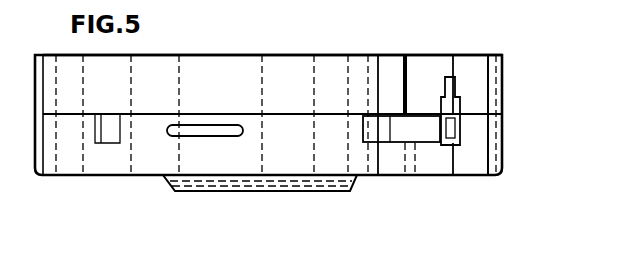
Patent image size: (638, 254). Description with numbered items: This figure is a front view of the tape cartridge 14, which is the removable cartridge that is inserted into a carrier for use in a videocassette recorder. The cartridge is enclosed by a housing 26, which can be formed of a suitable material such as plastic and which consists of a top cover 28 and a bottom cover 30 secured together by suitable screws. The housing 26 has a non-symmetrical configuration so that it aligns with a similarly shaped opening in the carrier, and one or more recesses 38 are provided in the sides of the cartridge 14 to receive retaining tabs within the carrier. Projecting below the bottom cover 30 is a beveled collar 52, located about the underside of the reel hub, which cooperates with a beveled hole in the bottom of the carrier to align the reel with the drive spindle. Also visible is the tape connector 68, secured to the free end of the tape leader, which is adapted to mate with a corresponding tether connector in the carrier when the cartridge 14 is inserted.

The tape cartridge 14 is at (480, 49).
The housing 26 is at (274, 55).
The top cover 28 is at (503, 86).
The bottom cover 30 is at (503, 148).
The recesses 38 is at (213, 138).
The beveled collar 52 is at (355, 184).
The tape connector 68 is at (452, 147).